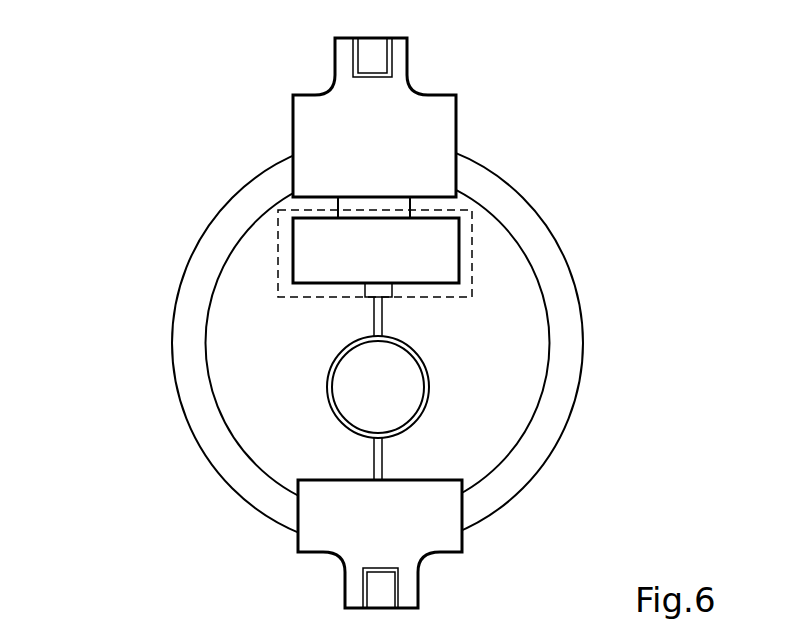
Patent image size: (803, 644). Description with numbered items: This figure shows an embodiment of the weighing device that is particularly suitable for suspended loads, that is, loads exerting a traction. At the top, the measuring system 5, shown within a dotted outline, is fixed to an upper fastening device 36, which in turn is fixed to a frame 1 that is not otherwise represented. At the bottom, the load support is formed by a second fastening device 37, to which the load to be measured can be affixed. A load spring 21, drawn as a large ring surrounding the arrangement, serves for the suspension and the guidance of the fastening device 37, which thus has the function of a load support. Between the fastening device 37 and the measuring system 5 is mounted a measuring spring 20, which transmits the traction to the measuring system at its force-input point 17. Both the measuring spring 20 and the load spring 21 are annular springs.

The frame 1 is at (455, 163).
The measuring system 5 is at (443, 223).
The force-input point 17 is at (370, 298).
The measuring spring 20 is at (428, 375).
The load spring 21 is at (567, 333).
The fastening device 36 is at (400, 60).
The fastening device 37 is at (408, 585).